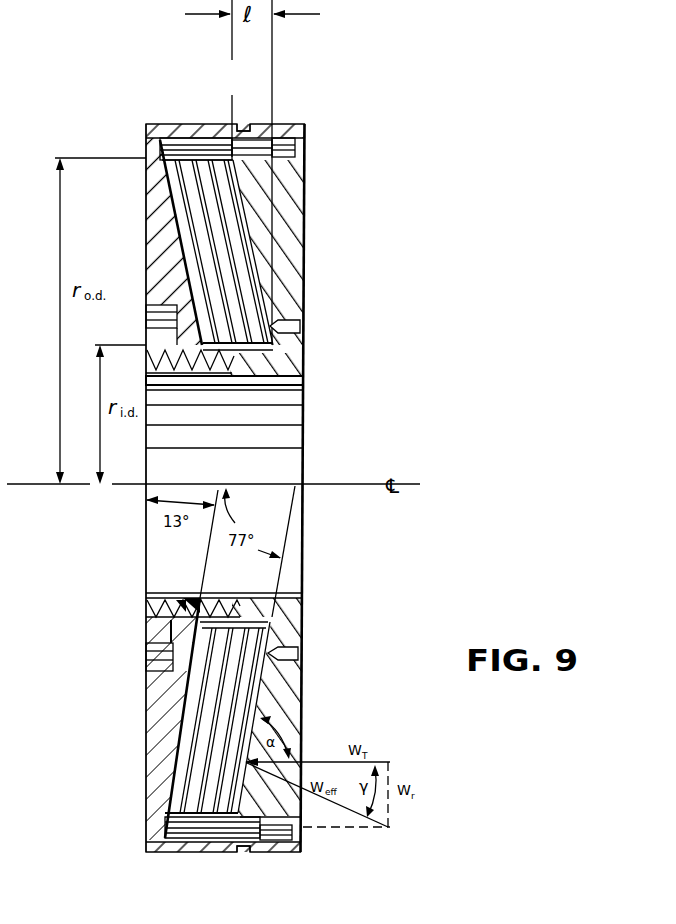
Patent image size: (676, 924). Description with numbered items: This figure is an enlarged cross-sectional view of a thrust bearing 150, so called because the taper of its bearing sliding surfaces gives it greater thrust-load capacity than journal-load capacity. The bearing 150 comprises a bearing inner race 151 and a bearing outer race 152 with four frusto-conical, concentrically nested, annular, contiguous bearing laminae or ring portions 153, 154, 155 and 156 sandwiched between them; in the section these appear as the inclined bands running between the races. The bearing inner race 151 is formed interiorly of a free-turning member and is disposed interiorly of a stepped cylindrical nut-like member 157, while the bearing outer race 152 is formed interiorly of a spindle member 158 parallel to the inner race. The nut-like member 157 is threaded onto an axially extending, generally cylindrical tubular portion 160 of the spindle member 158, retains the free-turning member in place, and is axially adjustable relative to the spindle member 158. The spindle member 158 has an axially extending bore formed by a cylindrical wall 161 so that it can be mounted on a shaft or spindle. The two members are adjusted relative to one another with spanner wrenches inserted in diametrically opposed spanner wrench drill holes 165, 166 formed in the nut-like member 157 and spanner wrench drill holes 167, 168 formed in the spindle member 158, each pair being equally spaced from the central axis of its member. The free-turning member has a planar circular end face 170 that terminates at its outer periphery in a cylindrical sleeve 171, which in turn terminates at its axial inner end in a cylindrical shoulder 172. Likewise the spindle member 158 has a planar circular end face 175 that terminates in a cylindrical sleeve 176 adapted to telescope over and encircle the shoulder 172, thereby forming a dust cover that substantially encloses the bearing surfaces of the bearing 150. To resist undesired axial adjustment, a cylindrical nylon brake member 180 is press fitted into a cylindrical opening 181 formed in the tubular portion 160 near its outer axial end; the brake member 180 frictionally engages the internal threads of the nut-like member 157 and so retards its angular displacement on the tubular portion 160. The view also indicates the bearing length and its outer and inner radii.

The thrust bearing 150 is at (144, 120).
The bearing inner race 151 is at (195, 695).
The bearing outer race 152 is at (252, 716).
The bearing lamina 153 is at (185, 770).
The bearing lamina 154 is at (205, 782).
The bearing lamina 155 is at (218, 797).
The bearing lamina 156 is at (240, 800).
The nut-like member 157 is at (146, 670).
The spindle member 158 is at (290, 245).
The tubular portion 160 is at (147, 605).
The cylindrical wall 161 is at (304, 380).
The spanner wrench drill hole 165 is at (144, 322).
The spanner wrench drill hole 166 is at (146, 650).
The spanner wrench drill hole 167 is at (305, 325).
The spanner wrench drill hole 168 is at (303, 650).
The planar circular end face 170 is at (146, 728).
The cylindrical sleeve 171 is at (177, 124).
The cylindrical shoulder 172 is at (243, 131).
The planar circular end face 175 is at (305, 217).
The cylindrical sleeve 176 is at (280, 124).
The nylon brake member 180 is at (190, 598).
The cylindrical opening 181 is at (184, 600).